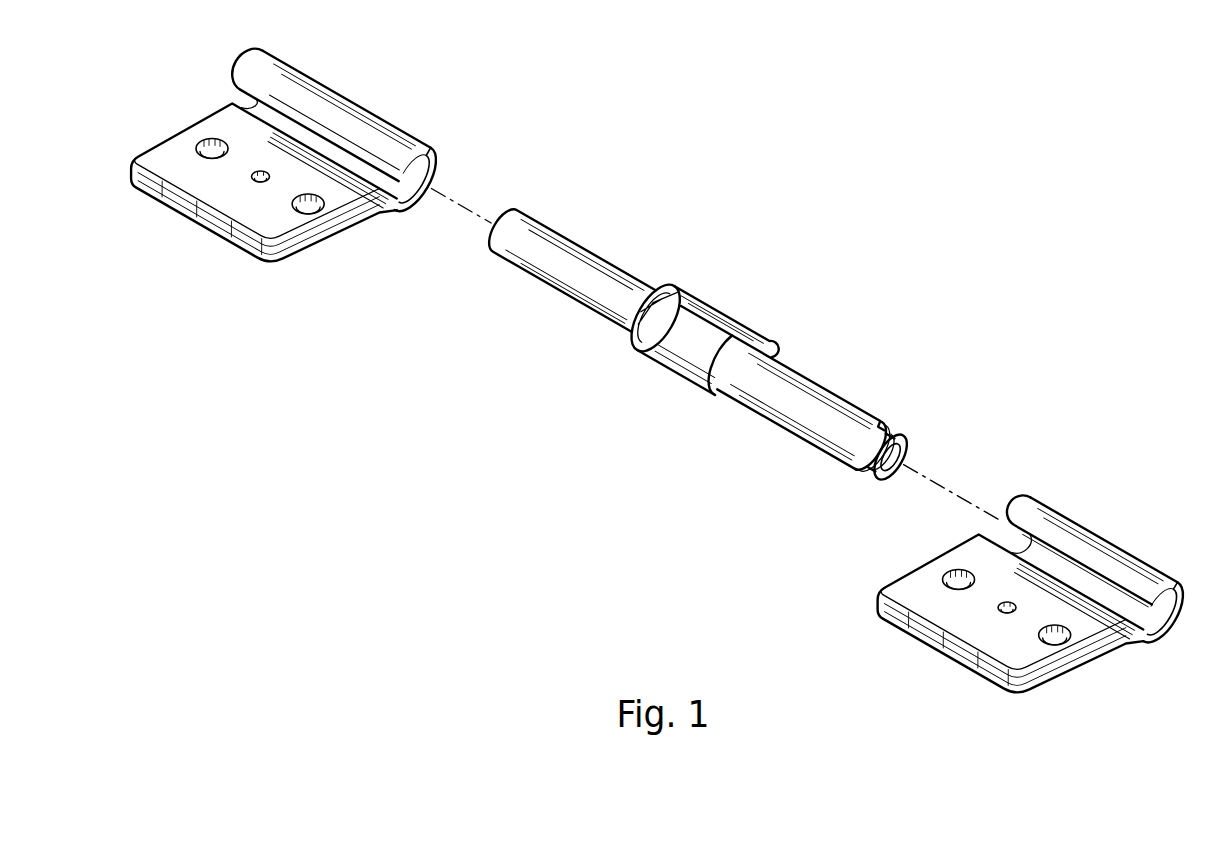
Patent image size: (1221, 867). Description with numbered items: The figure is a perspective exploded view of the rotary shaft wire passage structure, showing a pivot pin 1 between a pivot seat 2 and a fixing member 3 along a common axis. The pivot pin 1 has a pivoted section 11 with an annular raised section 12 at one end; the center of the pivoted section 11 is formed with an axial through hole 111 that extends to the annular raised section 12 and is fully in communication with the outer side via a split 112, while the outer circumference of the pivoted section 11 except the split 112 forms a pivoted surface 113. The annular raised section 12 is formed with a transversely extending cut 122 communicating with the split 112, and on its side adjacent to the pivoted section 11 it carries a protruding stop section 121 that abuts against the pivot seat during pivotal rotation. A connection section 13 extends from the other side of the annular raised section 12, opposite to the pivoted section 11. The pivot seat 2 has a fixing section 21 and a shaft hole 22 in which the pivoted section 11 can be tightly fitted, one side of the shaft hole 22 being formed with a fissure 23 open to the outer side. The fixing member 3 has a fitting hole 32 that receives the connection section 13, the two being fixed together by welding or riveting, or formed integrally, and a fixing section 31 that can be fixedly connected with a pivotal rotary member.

The pivot pin 1 is at (733, 291).
The pivoted section 11 is at (913, 447).
The axial through hole 111 is at (898, 478).
The split 112 is at (847, 404).
The pivoted surface 113 is at (797, 411).
The annular raised section 12 is at (683, 358).
The stop section 121 is at (780, 353).
The transversely extending cut 122 is at (633, 303).
The connection section 13 is at (567, 268).
The pivot seat 2 is at (1107, 524).
The fixing section 21 is at (987, 632).
The shaft hole 22 is at (1153, 613).
The fissure 23 is at (1097, 590).
The fixing member 3 is at (360, 88).
The fixing section 31 is at (227, 203).
The fitting hole 32 is at (420, 204).